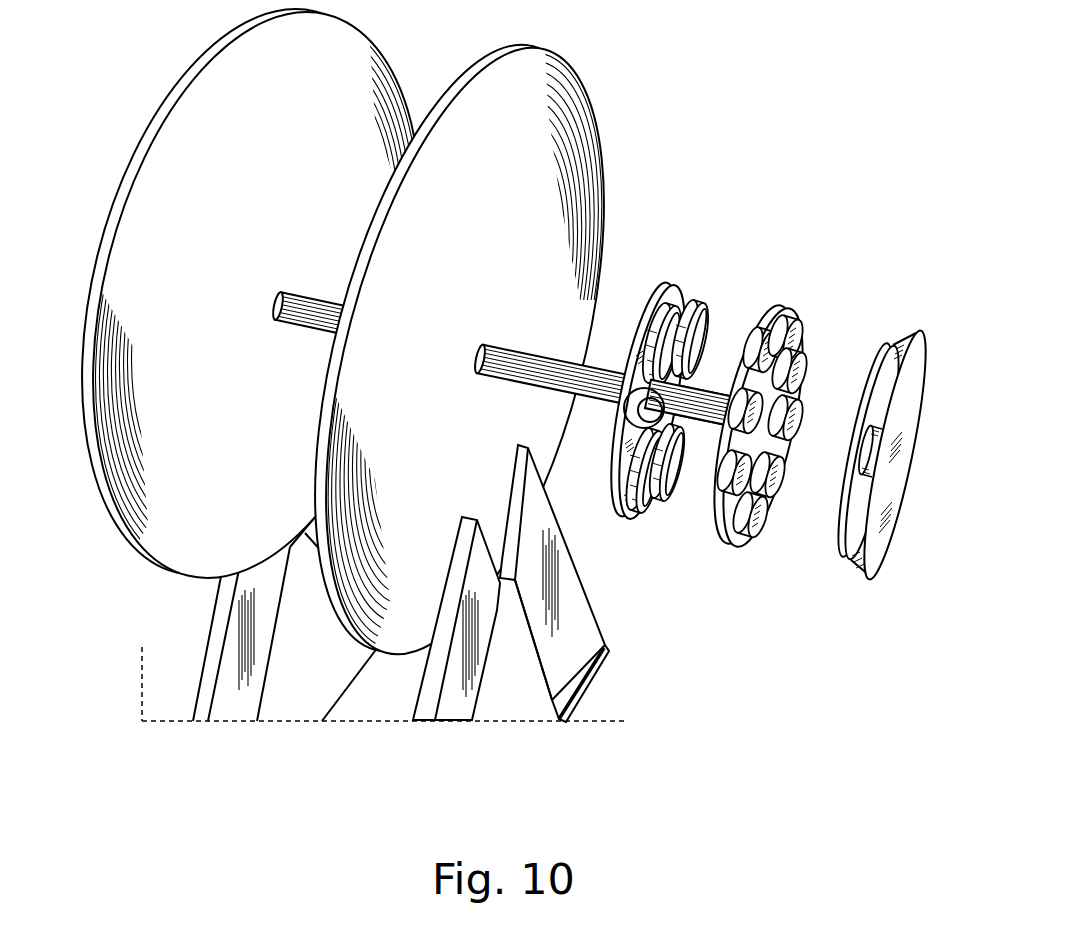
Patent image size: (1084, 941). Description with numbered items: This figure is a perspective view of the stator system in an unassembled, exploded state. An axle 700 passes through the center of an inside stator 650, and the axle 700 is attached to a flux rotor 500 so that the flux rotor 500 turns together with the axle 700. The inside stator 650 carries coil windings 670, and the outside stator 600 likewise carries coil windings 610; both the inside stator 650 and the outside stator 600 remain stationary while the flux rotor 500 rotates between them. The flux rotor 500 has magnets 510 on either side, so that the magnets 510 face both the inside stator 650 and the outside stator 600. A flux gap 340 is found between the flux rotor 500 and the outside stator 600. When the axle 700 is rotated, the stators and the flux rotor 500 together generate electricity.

The axle 700 is at (600, 367).
The inside stator 650 is at (681, 285).
The coil windings of inside stator 670 is at (670, 506).
The flux rotor 500 is at (740, 550).
The magnets 510 is at (797, 324).
The outside stator 600 is at (920, 331).
The coil windings of outside stator 610 is at (883, 372).
The flux gap 340 is at (818, 516).